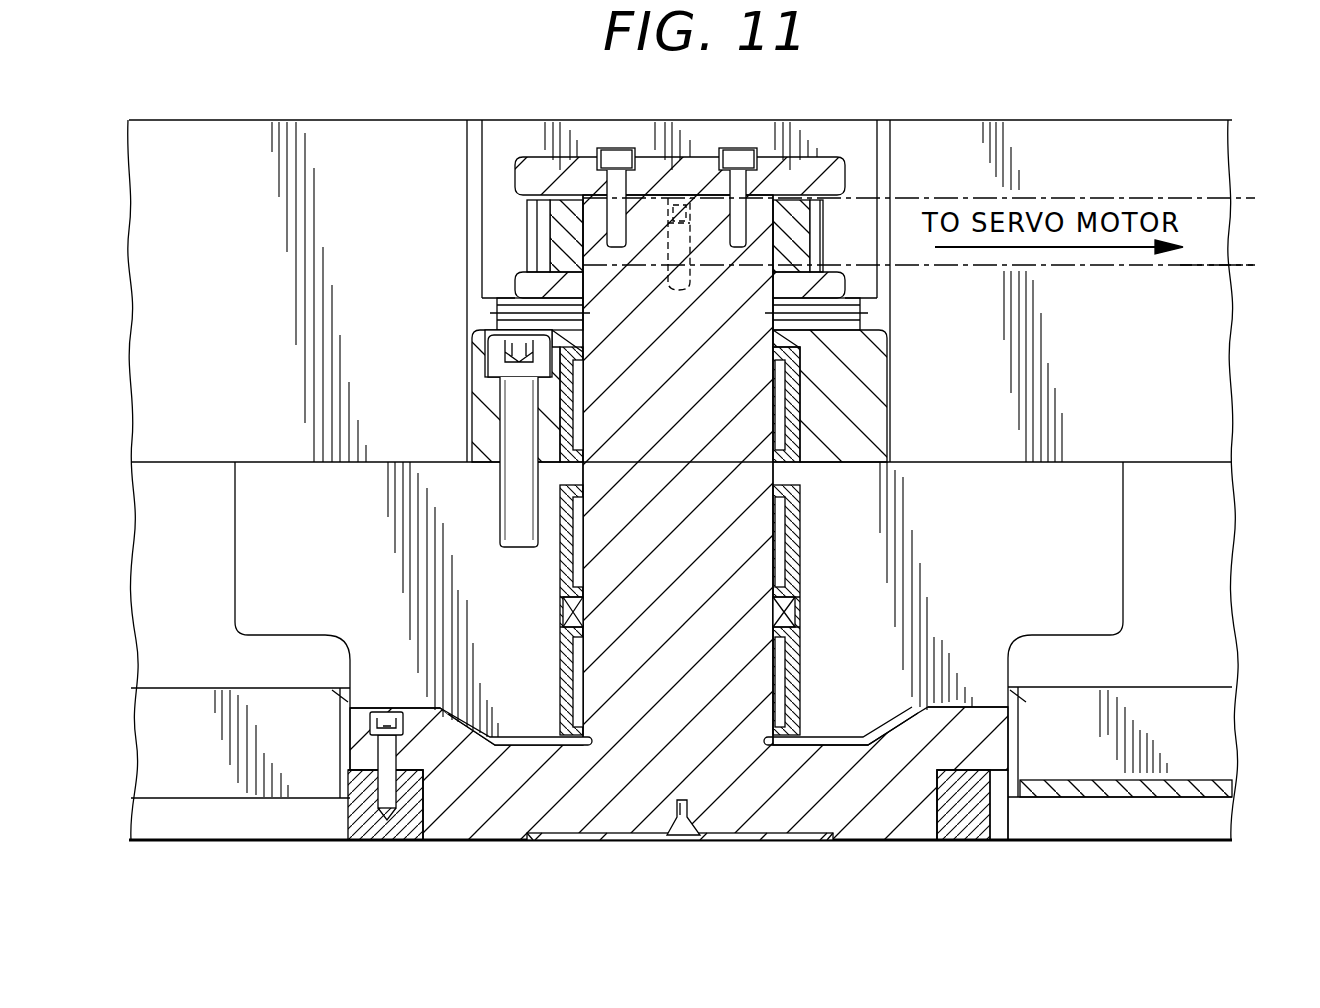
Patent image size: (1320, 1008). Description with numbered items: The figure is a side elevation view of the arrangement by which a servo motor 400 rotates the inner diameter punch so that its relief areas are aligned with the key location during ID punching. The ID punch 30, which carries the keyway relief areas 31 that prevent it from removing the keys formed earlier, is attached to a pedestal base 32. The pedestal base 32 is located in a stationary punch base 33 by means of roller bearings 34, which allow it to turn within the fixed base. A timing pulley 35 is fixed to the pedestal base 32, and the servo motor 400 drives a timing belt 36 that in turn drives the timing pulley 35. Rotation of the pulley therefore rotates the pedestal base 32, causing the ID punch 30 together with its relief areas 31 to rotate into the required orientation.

The axial piston pump assembly 400 is at (920, 105).
The spacer block 30 is at (968, 815).
The gap / wall 31 is at (1000, 810).
The shaft and base 32 is at (717, 775).
The housing body 33 is at (1062, 535).
The bushing strips 34 is at (807, 660).
The bearing bushing 35 is at (567, 222).
The servo motor axis line 36 is at (1243, 263).